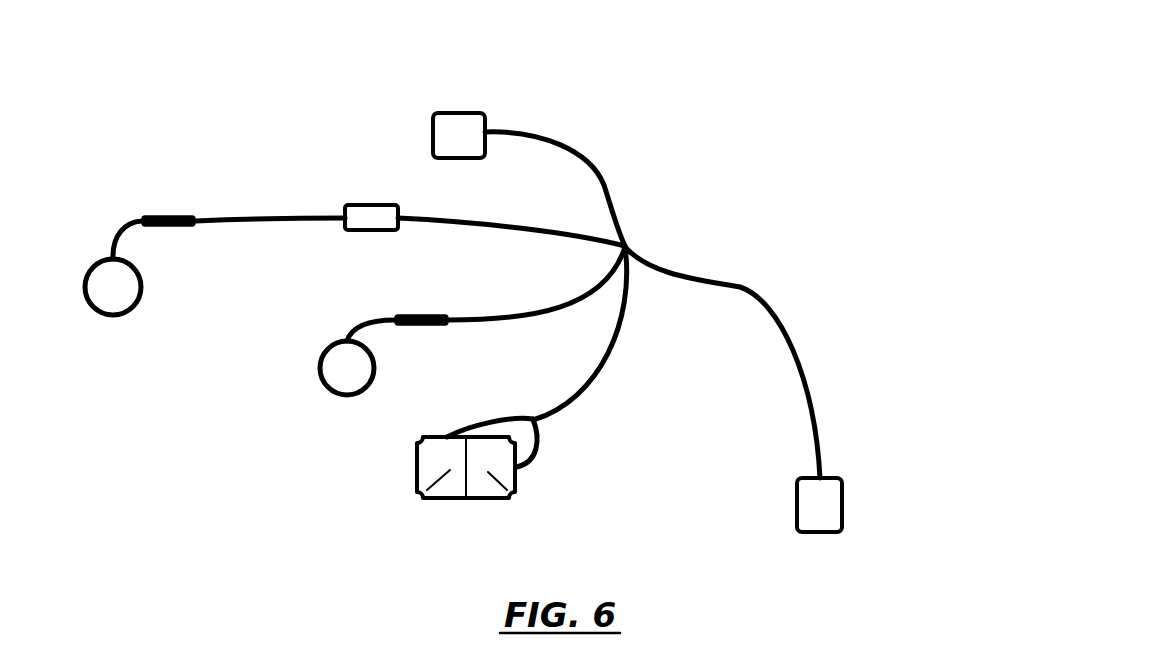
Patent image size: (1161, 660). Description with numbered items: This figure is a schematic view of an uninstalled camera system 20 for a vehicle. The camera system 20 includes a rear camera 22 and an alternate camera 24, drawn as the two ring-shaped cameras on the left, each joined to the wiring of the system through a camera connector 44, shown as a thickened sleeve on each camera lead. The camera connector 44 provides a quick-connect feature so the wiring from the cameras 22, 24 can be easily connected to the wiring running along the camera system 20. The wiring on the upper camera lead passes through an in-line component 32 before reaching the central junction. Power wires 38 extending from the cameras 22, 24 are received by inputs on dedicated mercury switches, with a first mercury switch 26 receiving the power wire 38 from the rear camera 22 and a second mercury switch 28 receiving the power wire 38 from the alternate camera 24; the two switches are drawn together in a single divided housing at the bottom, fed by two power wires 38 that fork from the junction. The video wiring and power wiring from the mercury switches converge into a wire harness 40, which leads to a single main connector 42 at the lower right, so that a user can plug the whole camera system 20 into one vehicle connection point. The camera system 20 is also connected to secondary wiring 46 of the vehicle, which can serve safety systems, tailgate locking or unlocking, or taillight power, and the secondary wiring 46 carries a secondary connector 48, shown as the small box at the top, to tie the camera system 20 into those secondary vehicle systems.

The camera system 20 is at (224, 90).
The rear camera 22 is at (353, 372).
The alternate camera 24 is at (122, 298).
The first mercury switch 26 is at (430, 497).
The second mercury switch 28 is at (508, 497).
The fuse holder 32 is at (380, 220).
The power wire 38 is at (477, 421).
The wire harness 40 is at (787, 270).
The main connector 42 is at (827, 505).
The camera connector 44 is at (162, 216).
The secondary wiring 46 is at (578, 150).
The secondary connector 48 is at (463, 135).